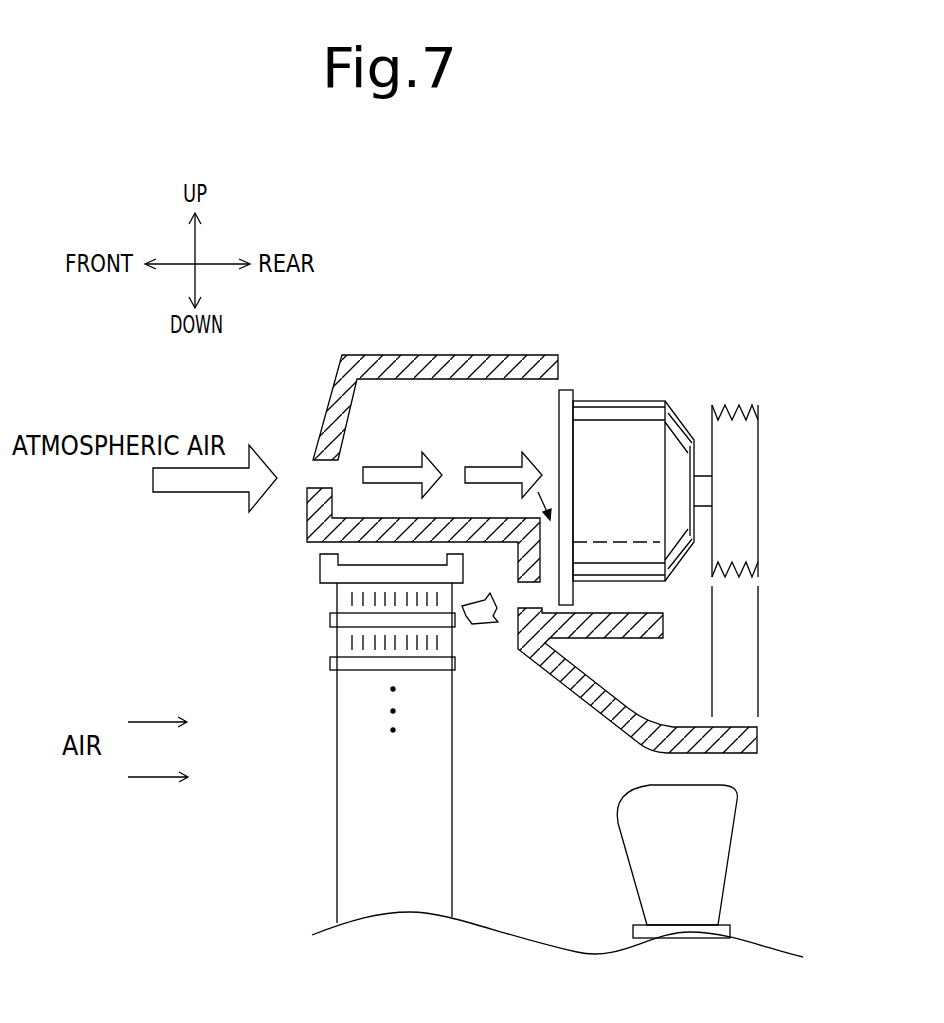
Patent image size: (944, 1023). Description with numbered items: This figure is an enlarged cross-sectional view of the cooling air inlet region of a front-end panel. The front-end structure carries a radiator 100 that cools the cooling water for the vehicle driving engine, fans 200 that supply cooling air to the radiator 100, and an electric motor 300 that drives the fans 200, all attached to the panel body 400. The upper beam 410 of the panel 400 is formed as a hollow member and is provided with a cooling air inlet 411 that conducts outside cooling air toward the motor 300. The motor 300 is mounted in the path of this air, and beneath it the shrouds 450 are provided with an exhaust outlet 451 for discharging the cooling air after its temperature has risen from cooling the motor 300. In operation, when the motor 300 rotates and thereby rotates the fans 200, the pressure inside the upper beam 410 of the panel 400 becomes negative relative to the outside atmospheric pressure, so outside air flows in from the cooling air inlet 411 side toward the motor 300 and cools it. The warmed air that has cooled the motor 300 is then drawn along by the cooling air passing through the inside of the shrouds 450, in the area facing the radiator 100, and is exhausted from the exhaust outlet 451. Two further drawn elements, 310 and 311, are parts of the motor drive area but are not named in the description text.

The radiator 100 is at (314, 706).
The fans 200 is at (705, 863).
The electric motor 300 is at (628, 432).
The shaft 310 is at (738, 631).
The pulley 311 is at (742, 537).
The panel body 400 is at (414, 433).
The upper beam 410 is at (466, 354).
The cooling air inlet 411 is at (316, 472).
The shrouds 450 is at (630, 707).
The exhaust outlet 451 is at (541, 597).